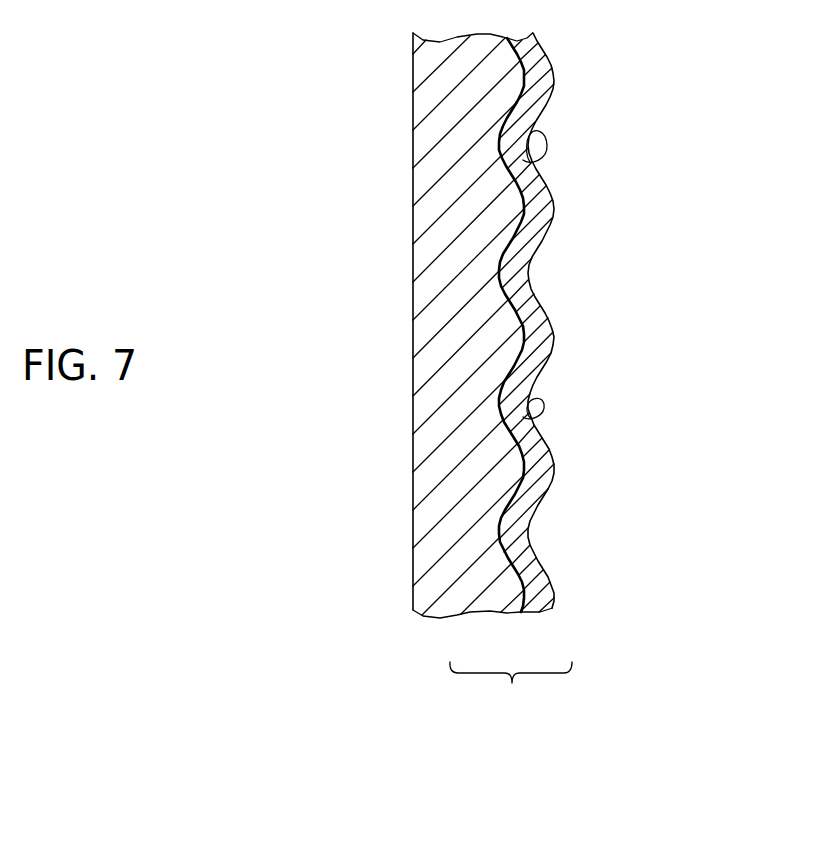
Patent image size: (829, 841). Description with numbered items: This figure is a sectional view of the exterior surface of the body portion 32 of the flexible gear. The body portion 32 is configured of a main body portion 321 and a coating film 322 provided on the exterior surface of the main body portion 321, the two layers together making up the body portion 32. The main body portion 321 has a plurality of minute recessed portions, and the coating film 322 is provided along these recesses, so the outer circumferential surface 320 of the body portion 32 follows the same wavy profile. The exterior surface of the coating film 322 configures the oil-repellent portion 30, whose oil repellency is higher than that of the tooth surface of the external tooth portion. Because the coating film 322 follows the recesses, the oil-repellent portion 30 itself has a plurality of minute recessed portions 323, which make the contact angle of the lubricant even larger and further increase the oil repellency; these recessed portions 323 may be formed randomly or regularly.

The oil-repellent portion 30 is at (530, 272).
The body portion 32 is at (511, 687).
The outer circumferential surface 320 is at (552, 467).
The main body portion 321 is at (467, 593).
The coating film 322 is at (537, 595).
The recessed portions 323 is at (523, 160).